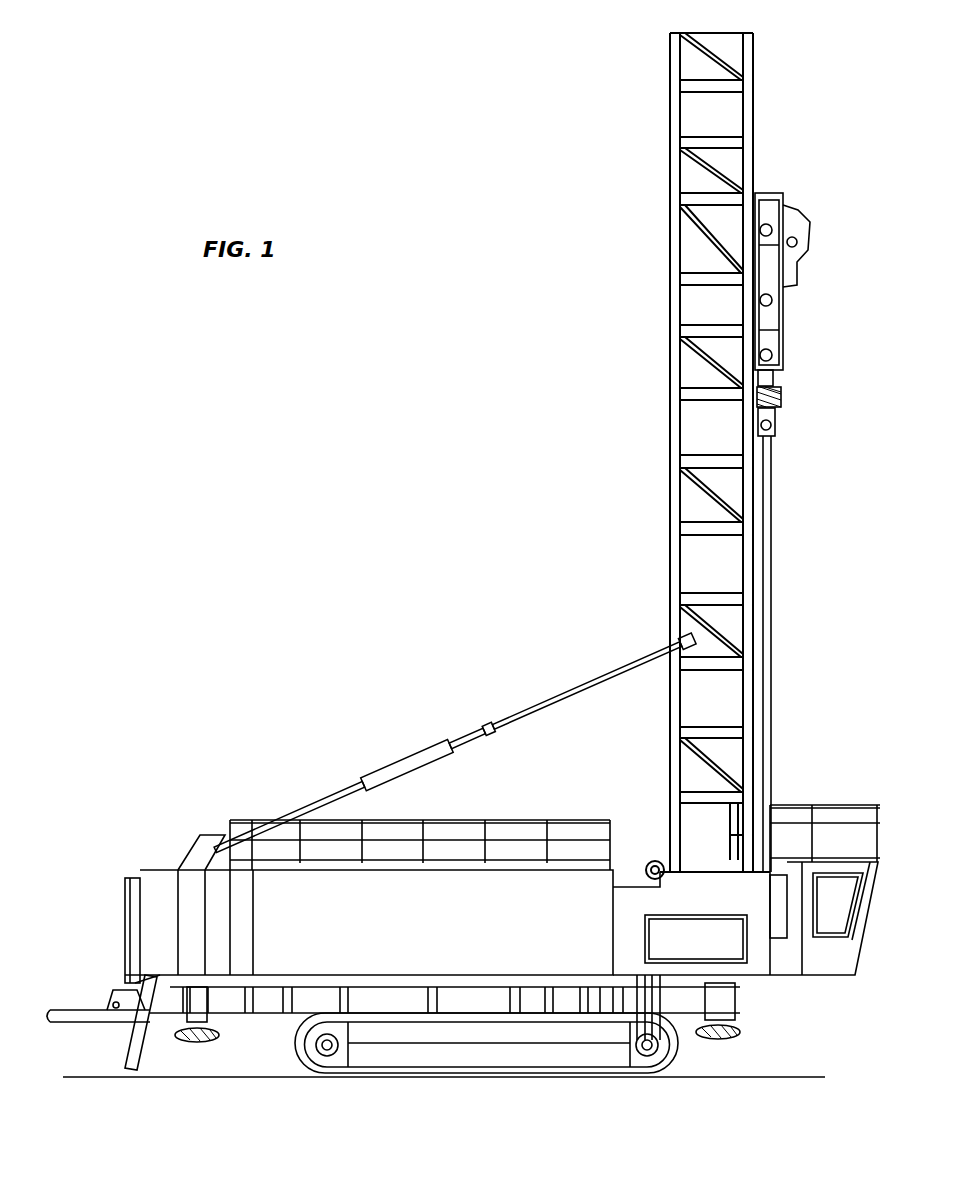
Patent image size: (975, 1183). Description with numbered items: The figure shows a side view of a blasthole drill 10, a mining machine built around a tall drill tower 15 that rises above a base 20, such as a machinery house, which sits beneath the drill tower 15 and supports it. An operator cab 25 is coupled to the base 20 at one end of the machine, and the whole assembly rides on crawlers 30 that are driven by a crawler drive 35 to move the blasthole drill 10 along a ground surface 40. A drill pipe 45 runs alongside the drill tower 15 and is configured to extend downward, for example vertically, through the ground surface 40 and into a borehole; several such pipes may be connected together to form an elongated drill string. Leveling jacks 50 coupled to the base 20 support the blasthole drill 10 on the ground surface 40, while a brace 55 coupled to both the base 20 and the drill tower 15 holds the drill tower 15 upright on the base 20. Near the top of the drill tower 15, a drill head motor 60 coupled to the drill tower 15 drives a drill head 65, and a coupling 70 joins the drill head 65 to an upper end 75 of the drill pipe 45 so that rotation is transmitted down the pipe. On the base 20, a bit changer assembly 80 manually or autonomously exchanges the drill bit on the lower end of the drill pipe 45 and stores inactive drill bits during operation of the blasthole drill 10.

The blasthole drill 10 is at (248, 686).
The drill tower 15 is at (663, 368).
The base 20 is at (542, 925).
The operator cab 25 is at (828, 965).
The crawlers 30 is at (297, 1060).
The crawler drive 35 is at (658, 1078).
The ground surface 40 is at (790, 1075).
The drill pipe 45 is at (773, 640).
The leveling jacks 50 is at (197, 1050).
The brace 55 is at (522, 705).
The drill head motor 60 is at (783, 350).
The drill head 65 is at (786, 392).
The coupling 70 is at (775, 423).
The upper end 75 is at (767, 472).
The bit changer assembly 80 is at (700, 932).